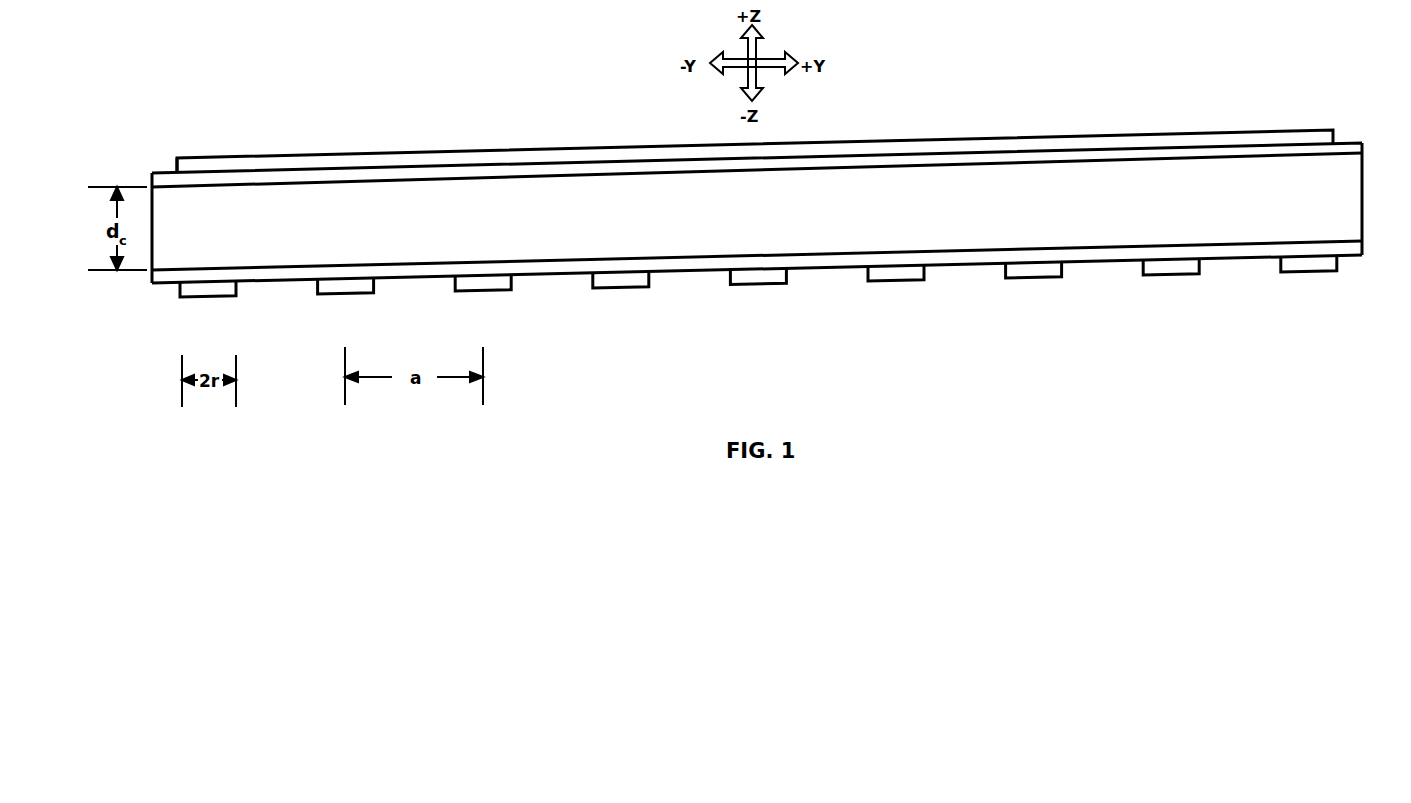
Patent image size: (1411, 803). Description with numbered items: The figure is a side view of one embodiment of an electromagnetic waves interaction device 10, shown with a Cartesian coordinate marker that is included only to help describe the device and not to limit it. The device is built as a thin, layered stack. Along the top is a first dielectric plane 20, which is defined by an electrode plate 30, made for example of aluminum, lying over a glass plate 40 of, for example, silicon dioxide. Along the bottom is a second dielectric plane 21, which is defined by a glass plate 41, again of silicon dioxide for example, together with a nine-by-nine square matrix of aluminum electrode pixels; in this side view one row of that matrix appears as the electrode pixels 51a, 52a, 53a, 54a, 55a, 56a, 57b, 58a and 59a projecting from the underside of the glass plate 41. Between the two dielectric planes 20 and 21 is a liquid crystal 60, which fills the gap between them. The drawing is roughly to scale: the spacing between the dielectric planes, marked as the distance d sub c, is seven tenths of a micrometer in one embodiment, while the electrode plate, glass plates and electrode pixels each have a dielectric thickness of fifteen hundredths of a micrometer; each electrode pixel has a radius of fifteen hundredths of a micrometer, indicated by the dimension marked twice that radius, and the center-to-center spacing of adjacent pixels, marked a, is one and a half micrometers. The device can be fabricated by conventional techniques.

The electromagnetic waves interaction device 10 is at (770, 362).
The first dielectric plane 20 is at (142, 165).
The second dielectric plane 21 is at (142, 283).
The electrode plate 30 is at (1333, 137).
The glass plate 40 is at (1350, 150).
The glass plate 41 is at (1352, 249).
The liquid crystal 60 is at (1350, 198).
The electrode pixel 51a is at (207, 290).
The electrode pixel 52a is at (344, 287).
The electrode pixel 53a is at (482, 284).
The electrode pixel 54a is at (620, 281).
The electrode pixel 55a is at (758, 277).
The electrode pixel 56a is at (895, 274).
The electrode pixel 57b is at (1033, 271).
The electrode pixel 58a is at (1170, 268).
The electrode pixel 59a is at (1308, 265).